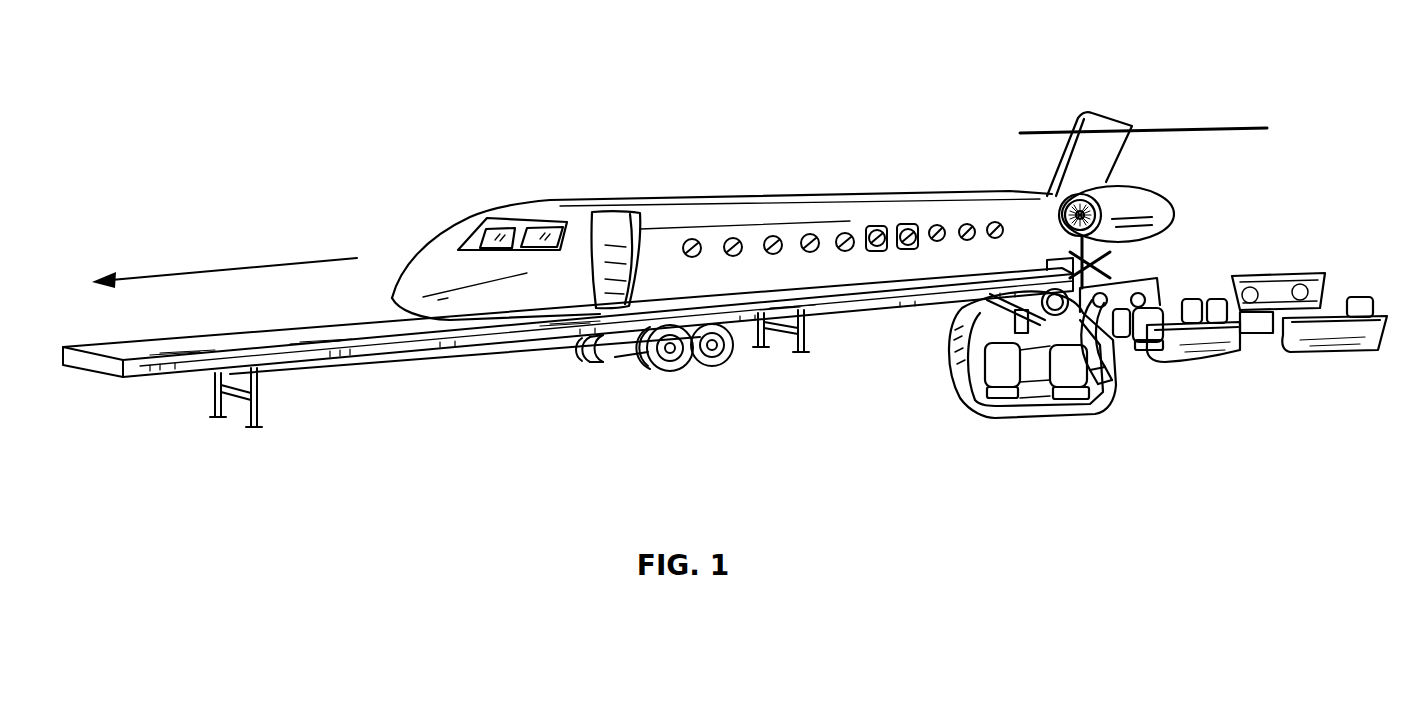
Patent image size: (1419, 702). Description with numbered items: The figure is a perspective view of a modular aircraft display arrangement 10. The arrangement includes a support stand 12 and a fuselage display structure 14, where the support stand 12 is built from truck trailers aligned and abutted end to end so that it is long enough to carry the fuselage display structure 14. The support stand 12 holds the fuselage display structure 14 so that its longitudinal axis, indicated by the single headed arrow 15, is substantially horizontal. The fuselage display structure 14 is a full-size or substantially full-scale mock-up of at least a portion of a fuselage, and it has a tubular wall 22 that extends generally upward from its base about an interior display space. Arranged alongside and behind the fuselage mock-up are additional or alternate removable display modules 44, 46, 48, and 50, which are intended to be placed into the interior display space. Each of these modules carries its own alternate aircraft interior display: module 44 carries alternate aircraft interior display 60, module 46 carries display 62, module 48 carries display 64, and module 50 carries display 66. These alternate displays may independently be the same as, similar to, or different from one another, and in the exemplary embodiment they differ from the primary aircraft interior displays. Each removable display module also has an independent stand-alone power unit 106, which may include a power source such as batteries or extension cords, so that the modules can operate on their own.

The modular aircraft display arrangement 10 is at (148, 76).
The support stand 12 is at (186, 376).
The fuselage display structure 14 is at (700, 288).
The single headed arrow 15 is at (262, 265).
The tubular wall 22 is at (660, 218).
The alternate removable display module 44 is at (1300, 338).
The alternate removable display module 46 is at (1197, 342).
The alternate removable display module 48 is at (1120, 365).
The alternate removable display module 50 is at (978, 393).
The alternate aircraft interior display 60 is at (1347, 253).
The alternate aircraft interior display 62 is at (1203, 285).
The alternate aircraft interior display 64 is at (1094, 324).
The alternate aircraft interior display 66 is at (1041, 395).
The independent stand-alone power unit 106 is at (958, 363).